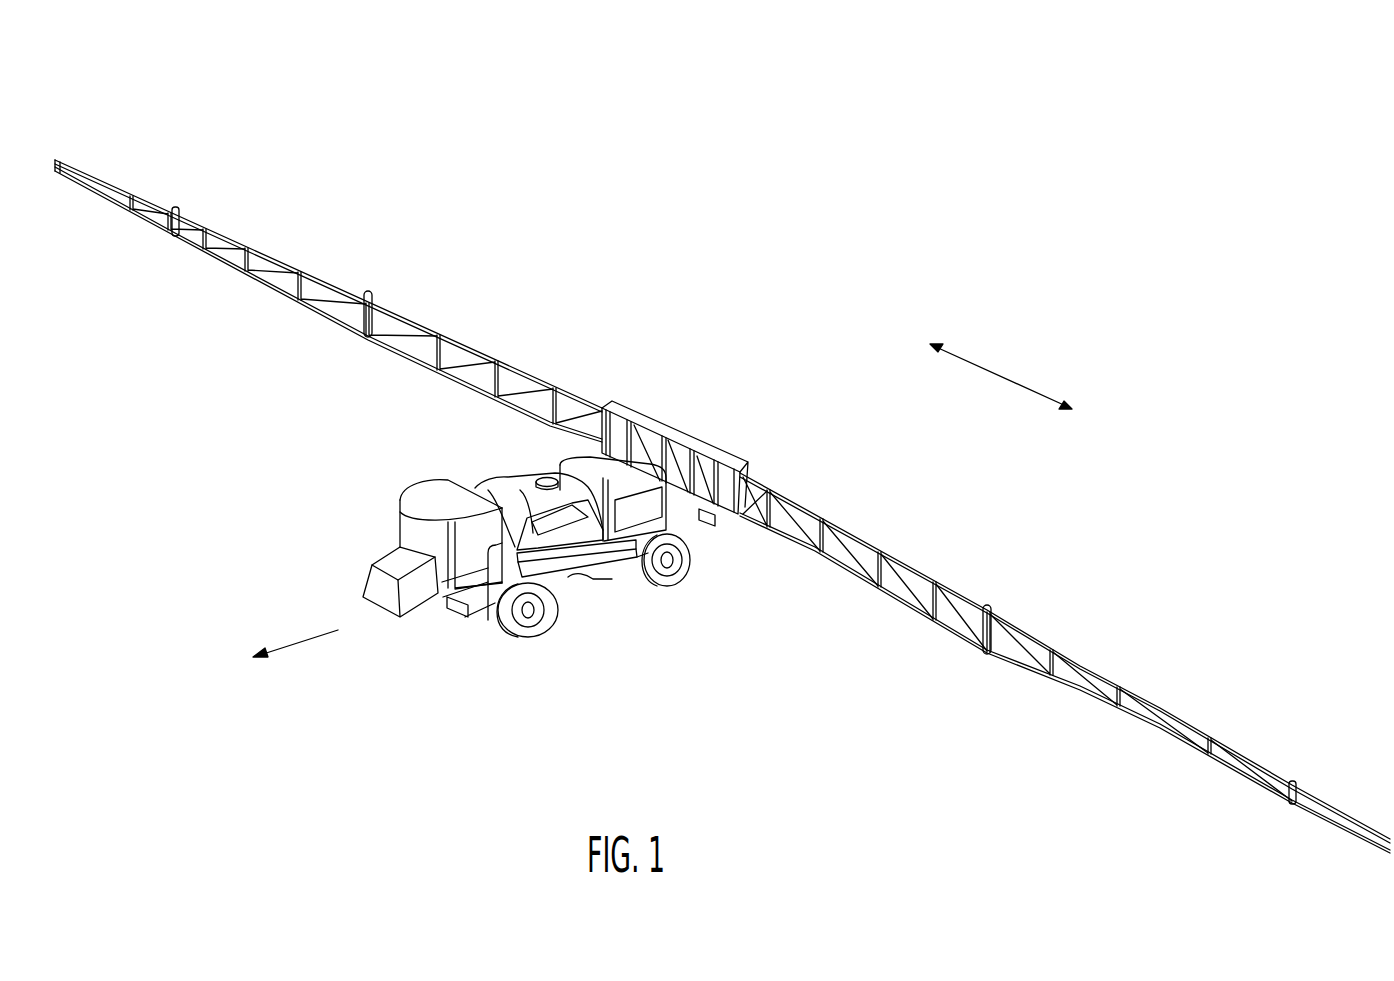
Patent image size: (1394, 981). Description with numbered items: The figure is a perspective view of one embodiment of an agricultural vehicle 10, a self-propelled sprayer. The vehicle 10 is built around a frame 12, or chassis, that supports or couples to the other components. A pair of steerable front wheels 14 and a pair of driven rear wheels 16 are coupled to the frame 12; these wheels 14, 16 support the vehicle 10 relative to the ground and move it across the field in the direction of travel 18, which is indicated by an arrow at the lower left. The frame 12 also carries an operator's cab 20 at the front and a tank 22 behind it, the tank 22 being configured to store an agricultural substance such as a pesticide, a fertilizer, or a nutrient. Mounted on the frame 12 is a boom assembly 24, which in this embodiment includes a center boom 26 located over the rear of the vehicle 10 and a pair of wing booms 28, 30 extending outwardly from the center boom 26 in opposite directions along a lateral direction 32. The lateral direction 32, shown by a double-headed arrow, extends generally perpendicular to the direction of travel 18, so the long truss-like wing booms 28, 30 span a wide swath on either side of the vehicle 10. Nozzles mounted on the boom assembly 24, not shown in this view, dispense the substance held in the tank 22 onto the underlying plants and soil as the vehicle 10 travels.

The agricultural vehicle 10 is at (152, 158).
The frame 12 is at (568, 577).
The front wheels 14 is at (524, 640).
The rear wheels 16 is at (671, 586).
The direction of travel 18 is at (300, 643).
The operator's cab 20 is at (423, 503).
The tank 22 is at (512, 487).
The boom assembly 24 is at (790, 470).
The center boom 26 is at (685, 434).
The wing boom 28 is at (1111, 678).
The wing boom 30 is at (254, 247).
The lateral direction 32 is at (1001, 374).